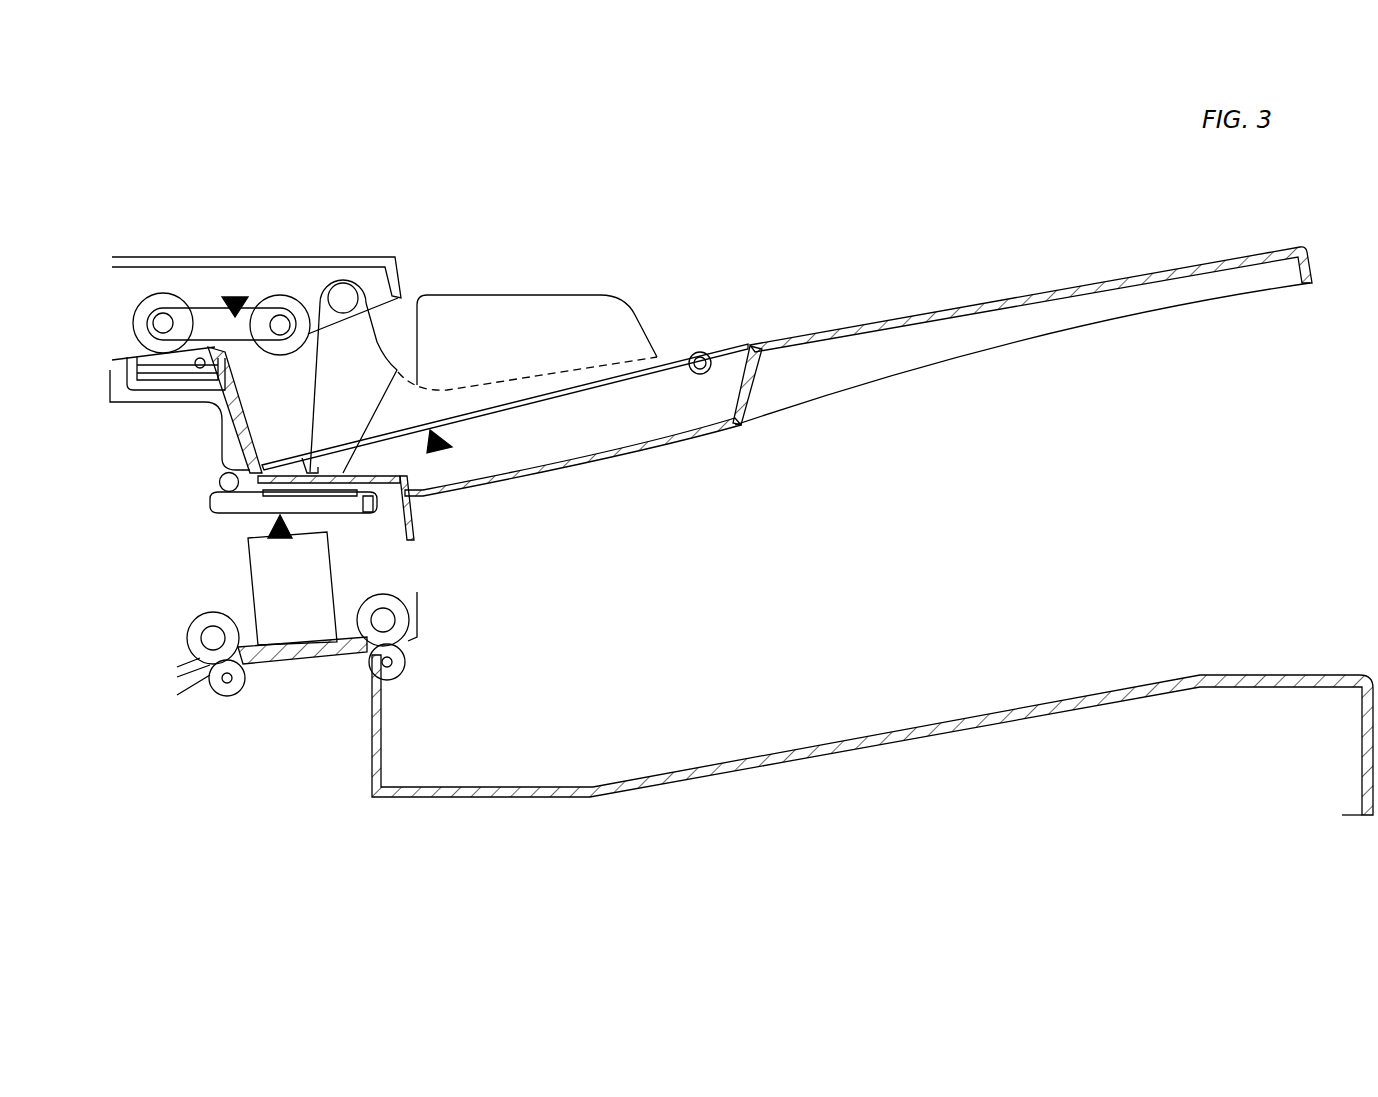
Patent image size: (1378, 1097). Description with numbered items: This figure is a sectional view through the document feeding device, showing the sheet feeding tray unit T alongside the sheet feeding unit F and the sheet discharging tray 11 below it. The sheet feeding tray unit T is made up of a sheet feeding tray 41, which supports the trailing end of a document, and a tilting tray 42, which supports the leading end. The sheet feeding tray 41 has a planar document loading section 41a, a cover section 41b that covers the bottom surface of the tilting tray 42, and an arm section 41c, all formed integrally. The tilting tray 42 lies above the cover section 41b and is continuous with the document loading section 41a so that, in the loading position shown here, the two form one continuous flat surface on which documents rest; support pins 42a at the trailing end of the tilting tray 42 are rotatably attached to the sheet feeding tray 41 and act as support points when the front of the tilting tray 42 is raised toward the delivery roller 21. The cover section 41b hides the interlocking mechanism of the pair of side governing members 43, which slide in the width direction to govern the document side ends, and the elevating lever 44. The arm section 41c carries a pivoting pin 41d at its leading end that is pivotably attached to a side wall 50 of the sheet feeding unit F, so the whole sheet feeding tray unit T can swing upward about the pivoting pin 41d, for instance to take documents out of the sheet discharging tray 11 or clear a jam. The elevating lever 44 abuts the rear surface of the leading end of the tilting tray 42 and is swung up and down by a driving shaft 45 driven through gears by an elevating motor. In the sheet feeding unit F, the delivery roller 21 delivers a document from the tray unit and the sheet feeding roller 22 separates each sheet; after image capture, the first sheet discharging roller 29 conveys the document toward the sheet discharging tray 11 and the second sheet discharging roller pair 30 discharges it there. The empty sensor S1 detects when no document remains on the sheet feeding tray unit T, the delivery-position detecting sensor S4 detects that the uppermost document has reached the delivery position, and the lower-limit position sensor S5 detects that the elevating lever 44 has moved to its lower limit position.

The sheet discharging tray 11 is at (885, 735).
The delivery roller 21 is at (288, 292).
The sheet feeding roller 22 is at (140, 318).
The first sheet discharging roller 29 is at (228, 700).
The second sheet discharging roller pair 30 is at (400, 672).
The sheet feeding tray 41 is at (858, 366).
The document loading section 41a is at (918, 313).
The cover section 41b is at (593, 463).
The arm section 41c is at (380, 345).
The pivoting pin 41d is at (345, 283).
The tilting tray 42 is at (549, 375).
The support pins 42a is at (700, 352).
The side governing members 43 is at (490, 300).
The elevating lever 44 is at (355, 505).
The driving shaft 45 is at (219, 482).
The side wall 50 is at (202, 283).
The sheet feeding unit F is at (160, 220).
The sheet feeding tray unit T is at (790, 289).
The empty sensor S1 is at (438, 455).
The delivery-position detecting sensor S4 is at (238, 292).
The lower-limit position sensor S5 is at (278, 540).